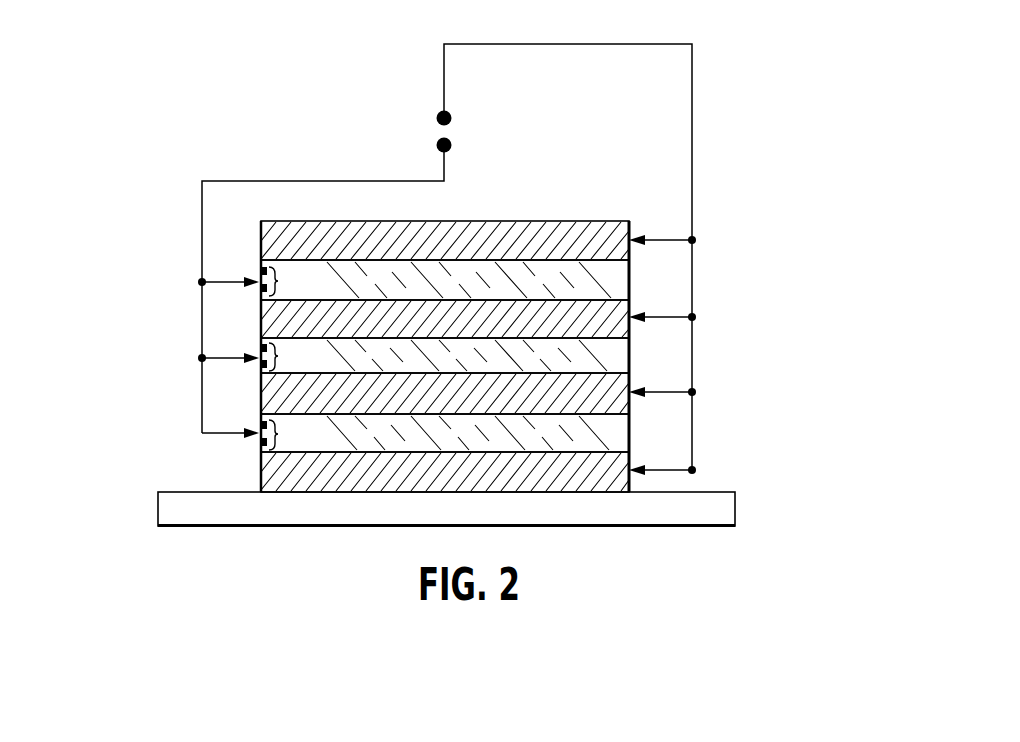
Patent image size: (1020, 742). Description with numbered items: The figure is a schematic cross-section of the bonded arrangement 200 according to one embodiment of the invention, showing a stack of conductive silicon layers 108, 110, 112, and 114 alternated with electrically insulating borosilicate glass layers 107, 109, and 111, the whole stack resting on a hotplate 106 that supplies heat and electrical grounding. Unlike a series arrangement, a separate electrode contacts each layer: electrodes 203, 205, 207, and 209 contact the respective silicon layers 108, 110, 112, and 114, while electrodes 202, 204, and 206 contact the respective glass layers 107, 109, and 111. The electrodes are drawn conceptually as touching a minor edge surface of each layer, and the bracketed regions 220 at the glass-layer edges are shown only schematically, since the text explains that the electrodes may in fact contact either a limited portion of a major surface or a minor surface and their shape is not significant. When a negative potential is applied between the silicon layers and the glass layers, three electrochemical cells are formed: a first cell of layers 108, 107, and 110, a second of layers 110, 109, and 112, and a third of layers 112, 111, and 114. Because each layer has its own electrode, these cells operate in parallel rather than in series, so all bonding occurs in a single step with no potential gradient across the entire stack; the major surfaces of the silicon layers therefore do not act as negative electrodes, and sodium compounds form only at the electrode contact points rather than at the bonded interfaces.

The hotplate 106 is at (735, 503).
The glass layer 107 is at (630, 278).
The silicon layer 108 is at (260, 242).
The glass layer 109 is at (630, 353).
The silicon layer 110 is at (260, 317).
The glass layer 111 is at (630, 431).
The silicon layer 112 is at (260, 392).
The silicon layer 114 is at (260, 471).
The multilayer device 200 is at (575, 158).
The electrode 202 is at (202, 282).
The electrode 203 is at (650, 240).
The electrode 204 is at (202, 358).
The electrode 205 is at (692, 317).
The electrode 206 is at (202, 433).
The electrode 207 is at (692, 392).
The electrode 209 is at (692, 470).
The electrode layer pair 220 is at (289, 358).